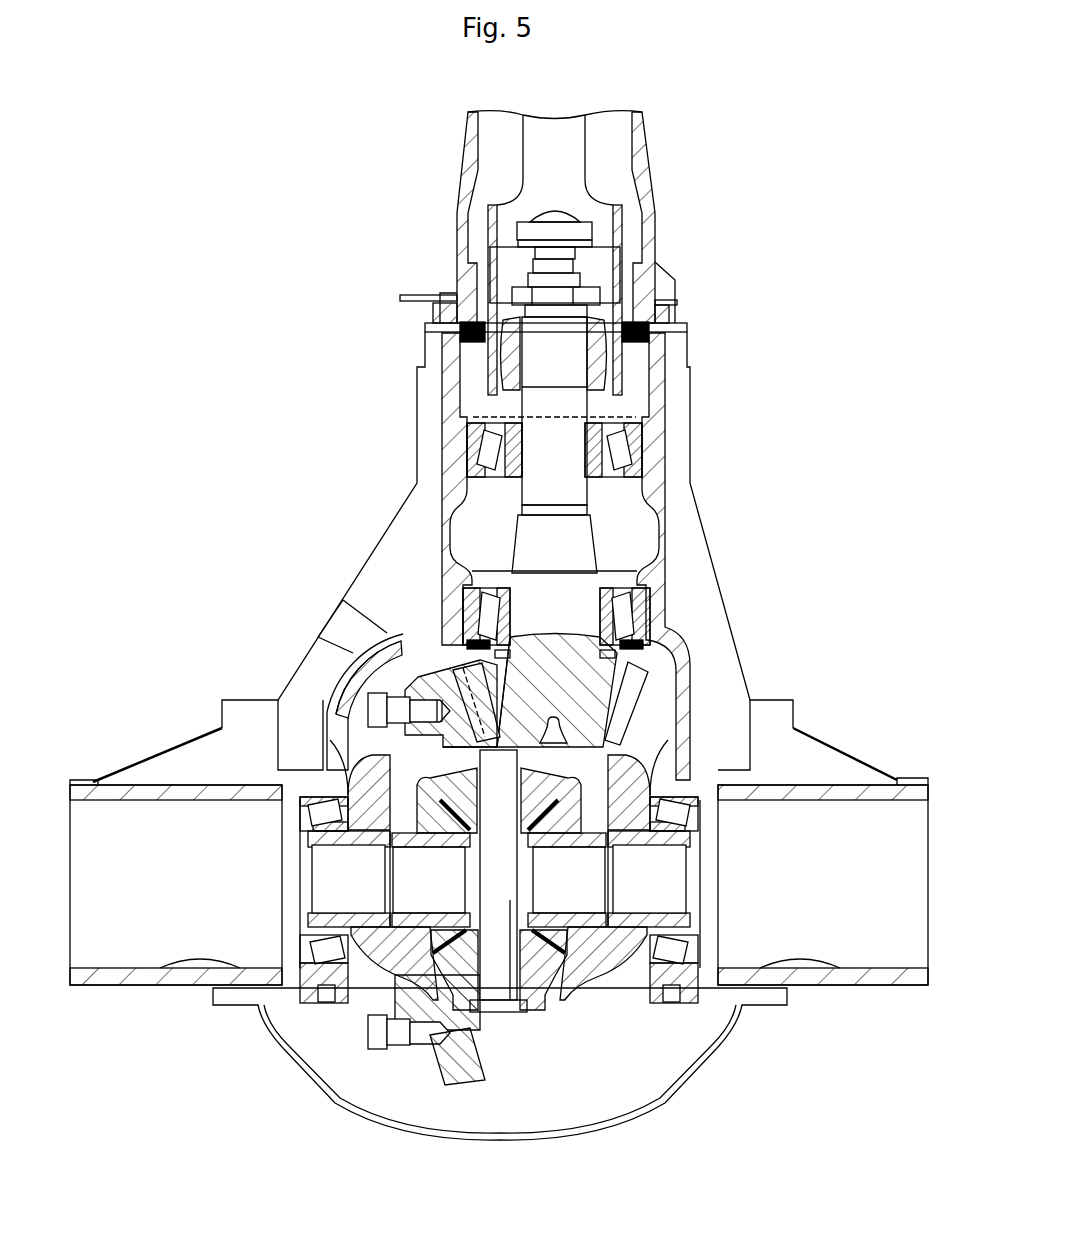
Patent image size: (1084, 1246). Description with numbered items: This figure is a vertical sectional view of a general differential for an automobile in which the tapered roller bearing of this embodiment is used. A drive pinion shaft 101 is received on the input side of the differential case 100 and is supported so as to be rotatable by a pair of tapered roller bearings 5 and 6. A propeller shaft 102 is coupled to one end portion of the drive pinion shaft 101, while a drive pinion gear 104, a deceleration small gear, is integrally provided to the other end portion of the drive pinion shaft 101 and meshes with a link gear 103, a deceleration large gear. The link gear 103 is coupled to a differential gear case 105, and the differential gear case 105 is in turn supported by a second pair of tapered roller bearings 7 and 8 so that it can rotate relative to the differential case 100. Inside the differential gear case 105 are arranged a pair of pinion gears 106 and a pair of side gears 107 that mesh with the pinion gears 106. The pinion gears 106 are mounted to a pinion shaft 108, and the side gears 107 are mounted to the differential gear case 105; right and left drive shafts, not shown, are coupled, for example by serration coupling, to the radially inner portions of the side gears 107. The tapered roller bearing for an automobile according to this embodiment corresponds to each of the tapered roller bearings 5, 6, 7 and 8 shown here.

The tapered roller bearing 5 is at (628, 608).
The tapered roller bearing 6 is at (626, 458).
The tapered roller bearing 7 is at (328, 808).
The tapered roller bearing 8 is at (672, 808).
The differential case 100 is at (437, 502).
The drive pinion shaft 101 is at (605, 540).
The propeller shaft 102 is at (636, 212).
The link gear 103 is at (436, 665).
The drive pinion gear 104 is at (632, 690).
The differential gear case 105 is at (400, 778).
The pinion gear 106 is at (535, 790).
The side gear 107 is at (425, 935).
The pinion shaft 108 is at (510, 960).